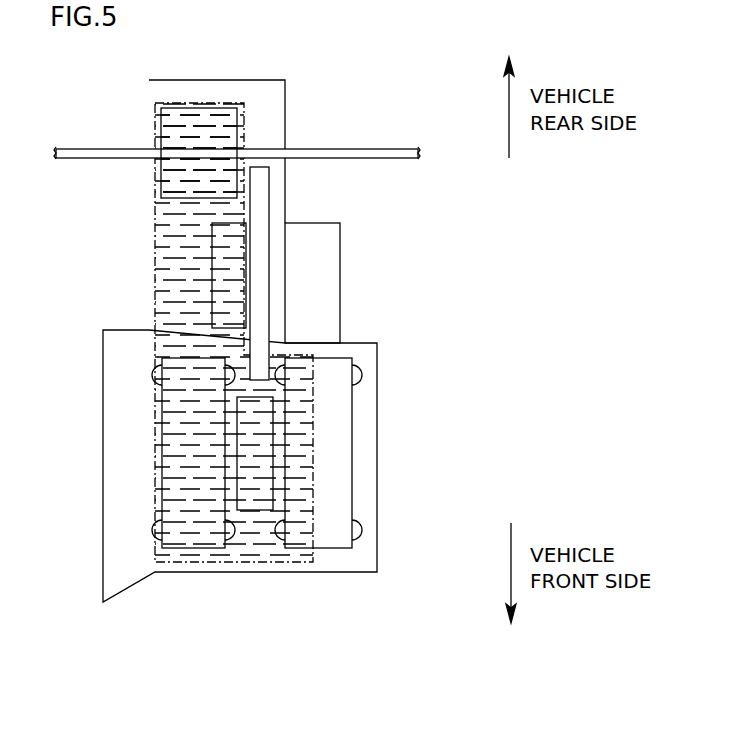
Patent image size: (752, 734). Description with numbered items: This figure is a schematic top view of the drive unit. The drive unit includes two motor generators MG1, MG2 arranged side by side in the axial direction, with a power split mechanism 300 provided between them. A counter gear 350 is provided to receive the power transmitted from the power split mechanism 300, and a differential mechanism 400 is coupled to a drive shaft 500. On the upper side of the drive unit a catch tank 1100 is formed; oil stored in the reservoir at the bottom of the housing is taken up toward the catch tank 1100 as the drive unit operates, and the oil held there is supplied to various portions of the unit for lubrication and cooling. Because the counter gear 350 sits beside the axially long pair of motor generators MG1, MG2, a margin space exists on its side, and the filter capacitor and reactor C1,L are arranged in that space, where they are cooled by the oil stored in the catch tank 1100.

The catch tank 1100 is at (157, 346).
The drive shaft 500 is at (104, 148).
The differential mechanism 400 is at (203, 106).
The counter gear 350 is at (212, 266).
The filter capacitor and reactor C1,L is at (343, 280).
The motor generator MG2 is at (187, 549).
The motor generator MG1 is at (333, 549).
The power split mechanism 300 is at (258, 511).